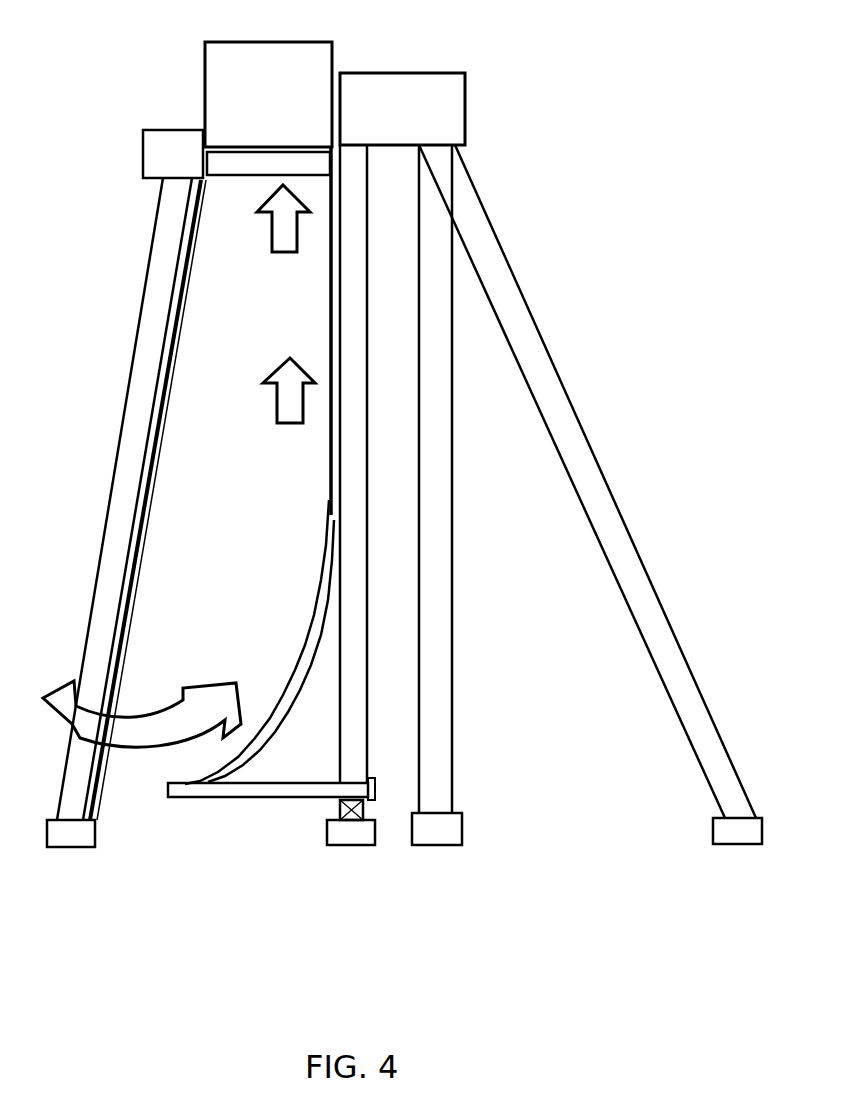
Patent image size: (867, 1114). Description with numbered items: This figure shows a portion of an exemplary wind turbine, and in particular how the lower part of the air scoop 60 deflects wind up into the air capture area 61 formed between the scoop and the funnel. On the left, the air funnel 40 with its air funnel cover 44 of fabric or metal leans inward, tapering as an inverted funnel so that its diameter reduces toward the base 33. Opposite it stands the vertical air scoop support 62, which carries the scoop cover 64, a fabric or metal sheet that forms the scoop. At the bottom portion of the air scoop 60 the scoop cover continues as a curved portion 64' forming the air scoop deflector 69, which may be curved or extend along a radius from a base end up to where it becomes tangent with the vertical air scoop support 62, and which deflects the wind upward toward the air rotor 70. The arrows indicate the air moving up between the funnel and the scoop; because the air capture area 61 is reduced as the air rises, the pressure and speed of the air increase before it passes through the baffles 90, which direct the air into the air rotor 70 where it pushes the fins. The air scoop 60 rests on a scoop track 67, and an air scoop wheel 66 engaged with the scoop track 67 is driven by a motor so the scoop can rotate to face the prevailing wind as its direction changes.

The air rotor 70 is at (228, 60).
The baffles 90 is at (252, 162).
The air scoop 60 is at (94, 251).
The air capture area 61 is at (178, 420).
The air funnel 40 is at (162, 303).
The air funnel cover 44 is at (186, 285).
The air scoop deflector 69 is at (283, 688).
The scoop cover 64 is at (281, 331).
The air scoop support 62 is at (355, 428).
The scoop track 67 is at (372, 815).
The scoop cover 64' is at (259, 642).
The air scoop wheel 66 is at (340, 800).
The base 33 is at (341, 836).